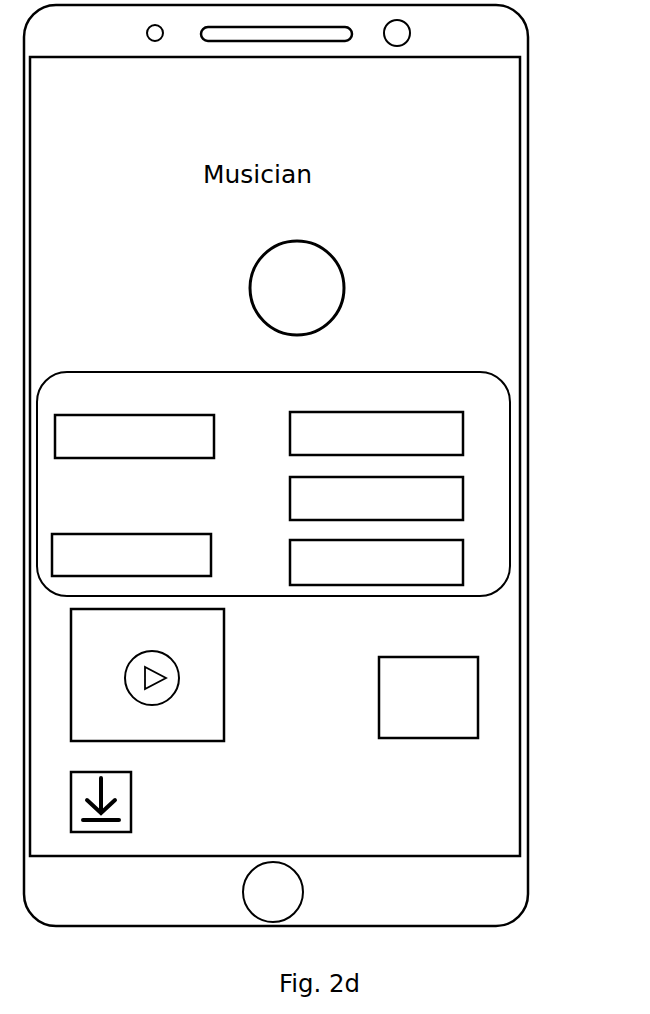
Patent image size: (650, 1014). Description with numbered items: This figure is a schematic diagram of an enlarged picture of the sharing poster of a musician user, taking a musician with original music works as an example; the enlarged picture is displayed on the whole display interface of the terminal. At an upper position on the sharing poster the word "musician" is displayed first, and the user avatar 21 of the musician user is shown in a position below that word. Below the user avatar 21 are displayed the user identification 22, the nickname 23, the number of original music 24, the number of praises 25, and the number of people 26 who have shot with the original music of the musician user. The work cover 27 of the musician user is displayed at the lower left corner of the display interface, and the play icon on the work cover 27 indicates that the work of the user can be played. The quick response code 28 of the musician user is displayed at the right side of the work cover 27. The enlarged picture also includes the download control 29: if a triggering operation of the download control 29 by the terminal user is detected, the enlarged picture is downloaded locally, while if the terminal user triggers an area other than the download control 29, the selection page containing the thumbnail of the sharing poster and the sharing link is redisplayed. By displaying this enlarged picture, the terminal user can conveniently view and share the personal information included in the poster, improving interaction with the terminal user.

The user avatar 21 is at (336, 260).
The user identification 22 is at (160, 415).
The nickname 23 is at (163, 534).
The number of original music 24 is at (463, 432).
The number of praises 25 is at (463, 505).
The number of people who have shot with the original music 26 is at (463, 568).
The work cover 27 is at (224, 655).
The quick response code 28 is at (417, 657).
The download control 29 is at (131, 797).